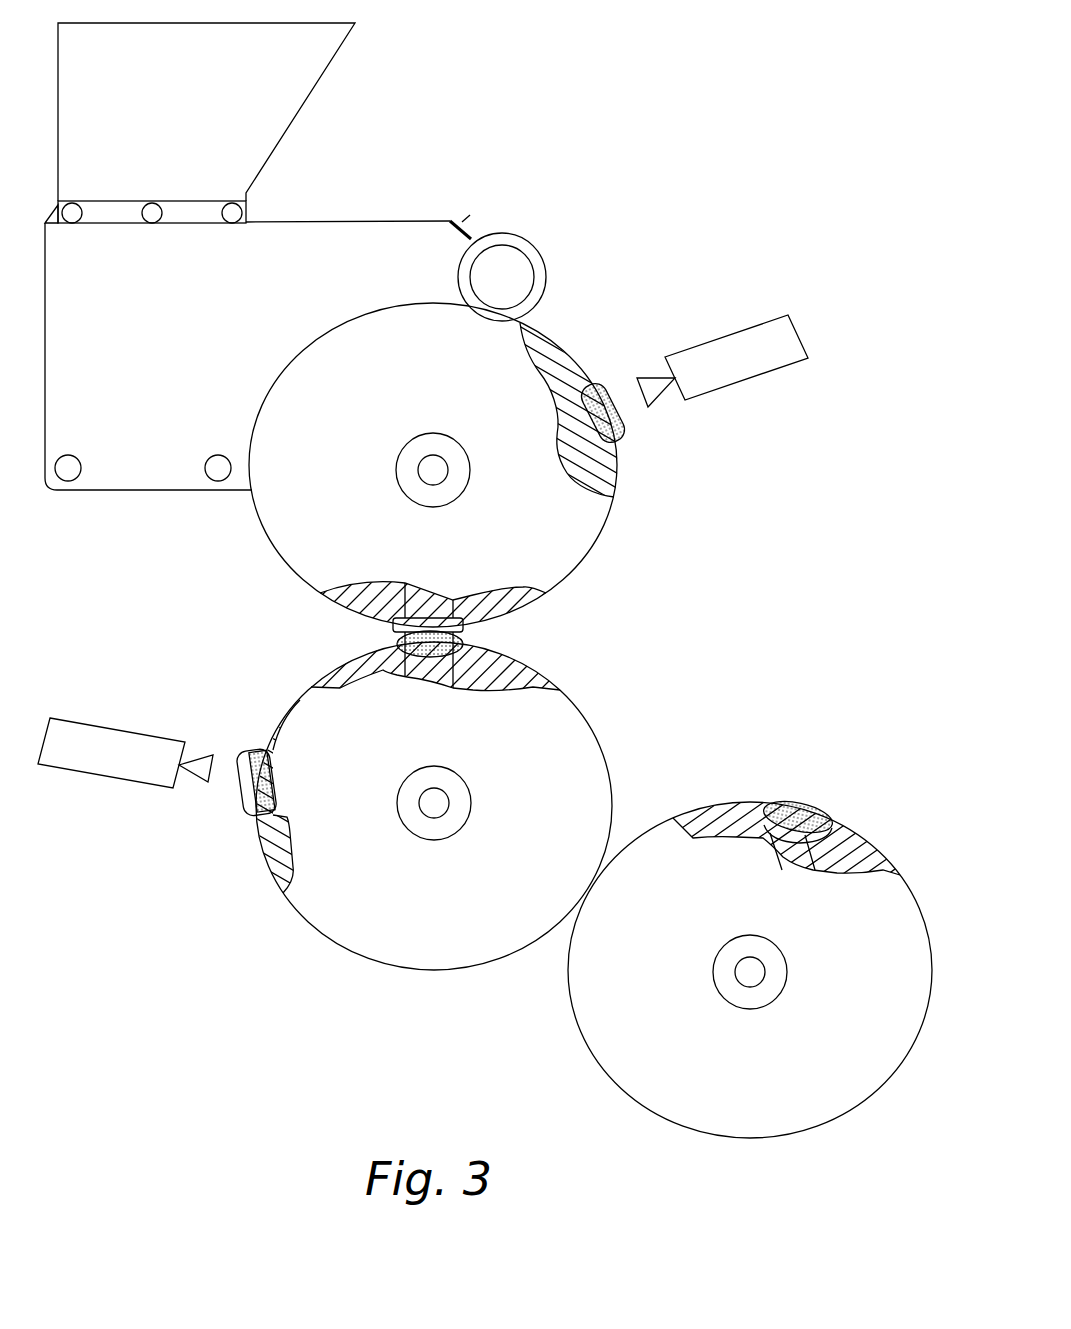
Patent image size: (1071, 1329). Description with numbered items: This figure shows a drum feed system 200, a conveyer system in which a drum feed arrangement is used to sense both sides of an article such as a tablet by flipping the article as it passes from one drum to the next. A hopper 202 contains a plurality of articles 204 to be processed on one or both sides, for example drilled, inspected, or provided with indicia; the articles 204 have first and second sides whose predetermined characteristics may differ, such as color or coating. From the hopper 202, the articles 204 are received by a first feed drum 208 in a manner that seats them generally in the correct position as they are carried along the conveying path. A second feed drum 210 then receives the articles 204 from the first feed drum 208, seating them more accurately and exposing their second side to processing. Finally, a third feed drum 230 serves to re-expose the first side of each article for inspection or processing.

The drum feed system 200 is at (697, 178).
The hopper 202 is at (303, 107).
The articles 204 is at (620, 427).
The first feed drum 208 is at (297, 542).
The second feed drum 210 is at (382, 940).
The third feed drum 230 is at (610, 1044).